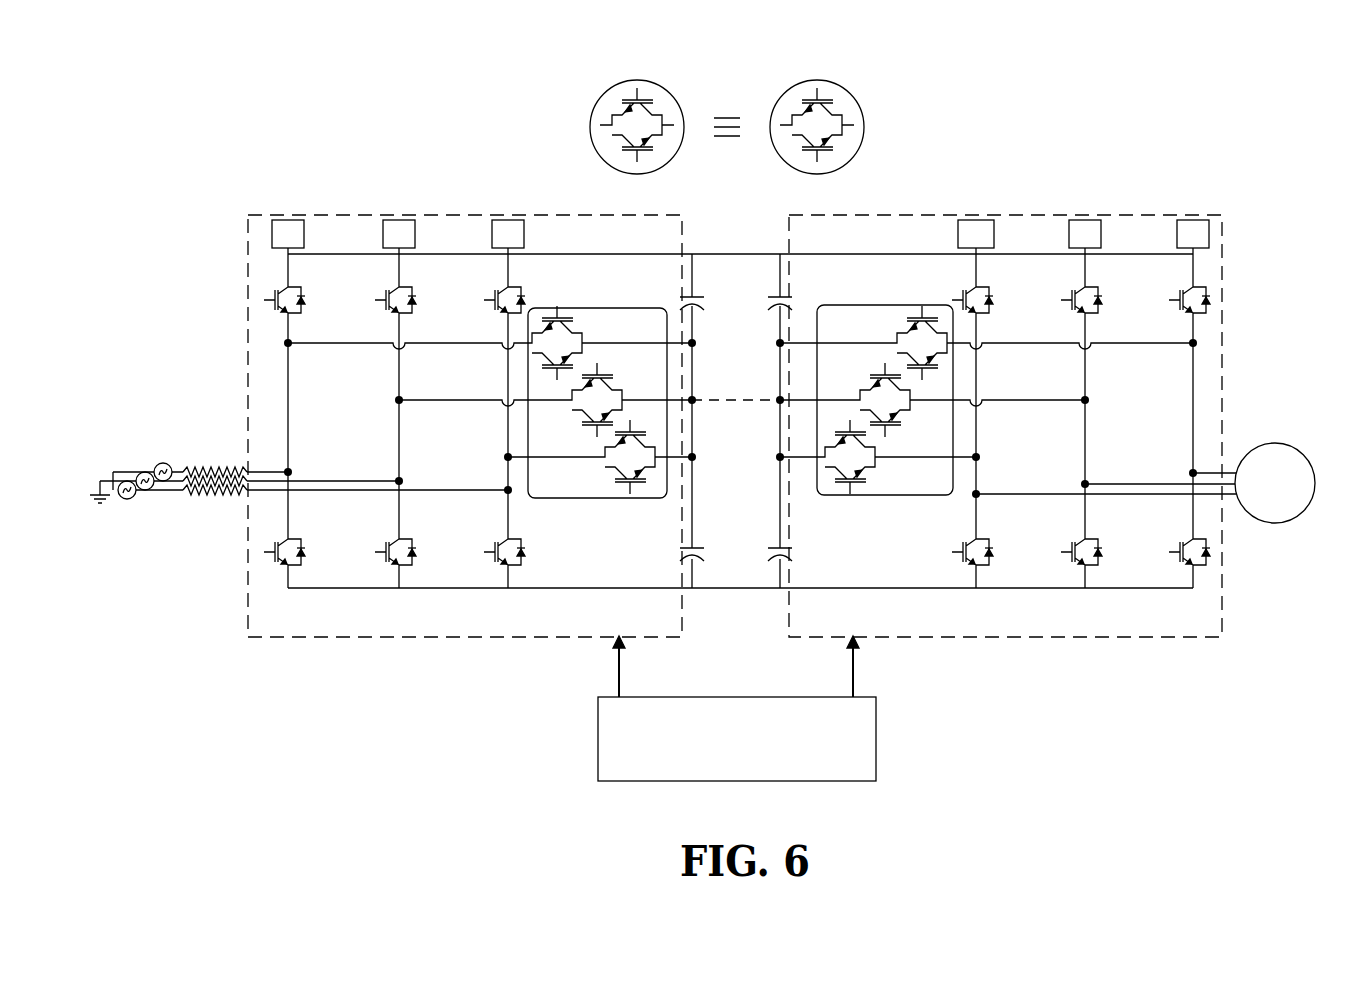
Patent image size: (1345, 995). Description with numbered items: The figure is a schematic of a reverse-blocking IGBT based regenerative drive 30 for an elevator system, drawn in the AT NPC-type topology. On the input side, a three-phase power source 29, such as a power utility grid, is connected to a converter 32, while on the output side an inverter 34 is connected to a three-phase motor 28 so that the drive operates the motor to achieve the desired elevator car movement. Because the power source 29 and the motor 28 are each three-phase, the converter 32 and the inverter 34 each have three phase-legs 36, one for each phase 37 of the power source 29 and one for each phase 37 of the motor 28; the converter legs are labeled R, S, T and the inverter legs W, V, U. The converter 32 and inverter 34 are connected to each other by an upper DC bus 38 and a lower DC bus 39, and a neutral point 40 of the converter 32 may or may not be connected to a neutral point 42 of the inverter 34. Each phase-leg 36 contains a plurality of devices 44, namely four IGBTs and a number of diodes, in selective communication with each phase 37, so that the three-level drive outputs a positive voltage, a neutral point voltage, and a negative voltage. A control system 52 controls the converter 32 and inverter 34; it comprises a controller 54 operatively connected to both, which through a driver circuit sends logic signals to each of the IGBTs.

The motor 28 is at (1278, 443).
The power source 29 is at (150, 452).
The regenerative drive 30 is at (1095, 106).
The converter 32 is at (248, 637).
The inverter 34 is at (1222, 637).
The phase-leg 36 is at (289, 208).
The phase 37 is at (175, 470).
The upper DC bus 38 is at (722, 254).
The lower DC bus 39 is at (722, 588).
The neutral point of the converter 40 is at (692, 400).
The neutral point of the inverter 42 is at (780, 400).
The devices 44 is at (300, 550).
The control system 52 is at (520, 668).
The controller 54 is at (876, 733).